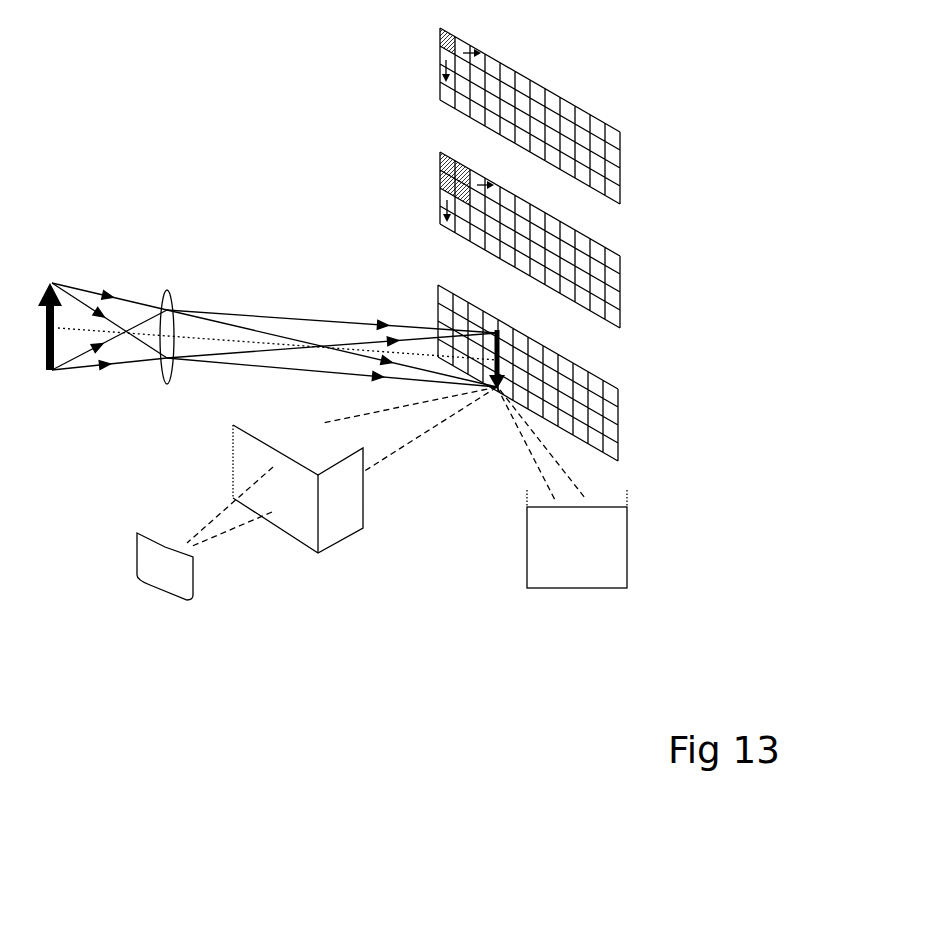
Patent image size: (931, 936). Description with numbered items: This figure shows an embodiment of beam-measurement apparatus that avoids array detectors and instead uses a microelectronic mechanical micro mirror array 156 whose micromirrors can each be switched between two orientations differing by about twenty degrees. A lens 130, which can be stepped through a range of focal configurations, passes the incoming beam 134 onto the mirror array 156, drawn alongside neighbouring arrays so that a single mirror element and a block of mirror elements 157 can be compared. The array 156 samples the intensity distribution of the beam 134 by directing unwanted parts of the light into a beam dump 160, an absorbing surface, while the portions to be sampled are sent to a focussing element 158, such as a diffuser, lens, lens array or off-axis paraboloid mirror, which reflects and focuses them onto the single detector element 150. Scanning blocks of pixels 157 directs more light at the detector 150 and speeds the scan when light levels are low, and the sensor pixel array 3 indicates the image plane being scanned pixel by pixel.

The image sensor pixel array 3 is at (600, 356).
The lens 130 is at (185, 271).
The beam 134 is at (276, 293).
The single detector element 150 is at (125, 510).
The micro mirror array 156 is at (413, 74).
The block of mirror elements 157 is at (413, 200).
The focussing element 158 is at (215, 439).
The beam dump 160 is at (513, 563).